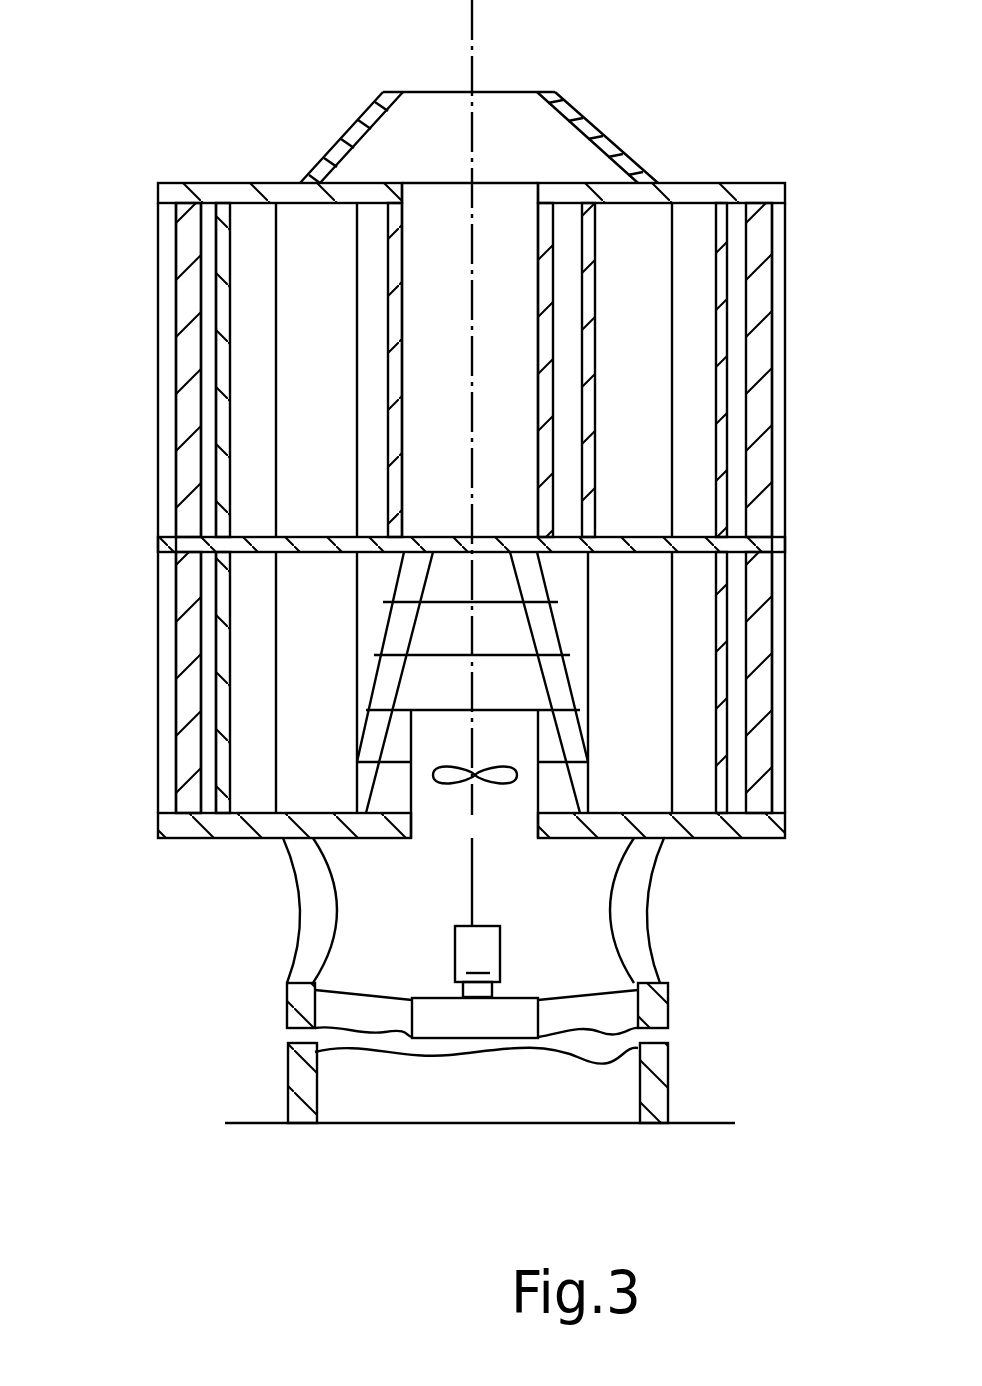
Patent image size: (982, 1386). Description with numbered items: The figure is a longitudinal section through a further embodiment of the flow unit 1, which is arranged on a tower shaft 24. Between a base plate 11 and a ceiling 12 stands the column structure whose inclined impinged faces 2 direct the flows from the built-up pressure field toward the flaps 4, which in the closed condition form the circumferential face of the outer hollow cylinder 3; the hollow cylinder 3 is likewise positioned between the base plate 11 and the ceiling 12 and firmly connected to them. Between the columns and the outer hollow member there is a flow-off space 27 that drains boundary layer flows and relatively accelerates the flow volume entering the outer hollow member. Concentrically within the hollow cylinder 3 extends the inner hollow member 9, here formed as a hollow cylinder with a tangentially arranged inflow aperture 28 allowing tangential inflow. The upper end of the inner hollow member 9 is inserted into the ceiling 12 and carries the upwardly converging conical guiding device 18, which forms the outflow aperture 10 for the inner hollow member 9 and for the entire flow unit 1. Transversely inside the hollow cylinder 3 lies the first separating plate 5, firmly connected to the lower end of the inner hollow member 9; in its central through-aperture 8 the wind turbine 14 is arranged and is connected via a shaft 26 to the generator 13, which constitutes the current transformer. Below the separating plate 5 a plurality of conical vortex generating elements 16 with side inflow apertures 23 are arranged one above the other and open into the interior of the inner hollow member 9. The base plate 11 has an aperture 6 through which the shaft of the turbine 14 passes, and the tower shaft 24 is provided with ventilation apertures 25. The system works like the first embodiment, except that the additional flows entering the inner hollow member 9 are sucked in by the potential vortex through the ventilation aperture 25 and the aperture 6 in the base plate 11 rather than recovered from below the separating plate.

The flow unit 1 is at (470, 22).
The impinged faces 2 is at (772, 338).
The hollow cylinder 3 is at (212, 305).
The flaps 4 is at (212, 425).
The first separating plate 5 is at (760, 528).
The aperture 6 is at (655, 312).
The through-aperture 8 is at (502, 543).
The inner hollow member 9 is at (490, 260).
The outflow aperture 10 is at (490, 90).
The base plate 11 is at (176, 828).
The ceiling 12 is at (260, 181).
The generator 13 is at (455, 955).
The wind turbine 14 is at (517, 777).
The vortex generating elements 16 is at (555, 740).
The conical guiding device 18 is at (593, 130).
The side inflow apertures 23 is at (545, 575).
The tower shaft 24 is at (657, 1090).
The ventilation apertures 25 is at (303, 883).
The shaft 26 is at (483, 890).
The flow-off space 27 is at (210, 495).
The inflow aperture 28 is at (565, 392).